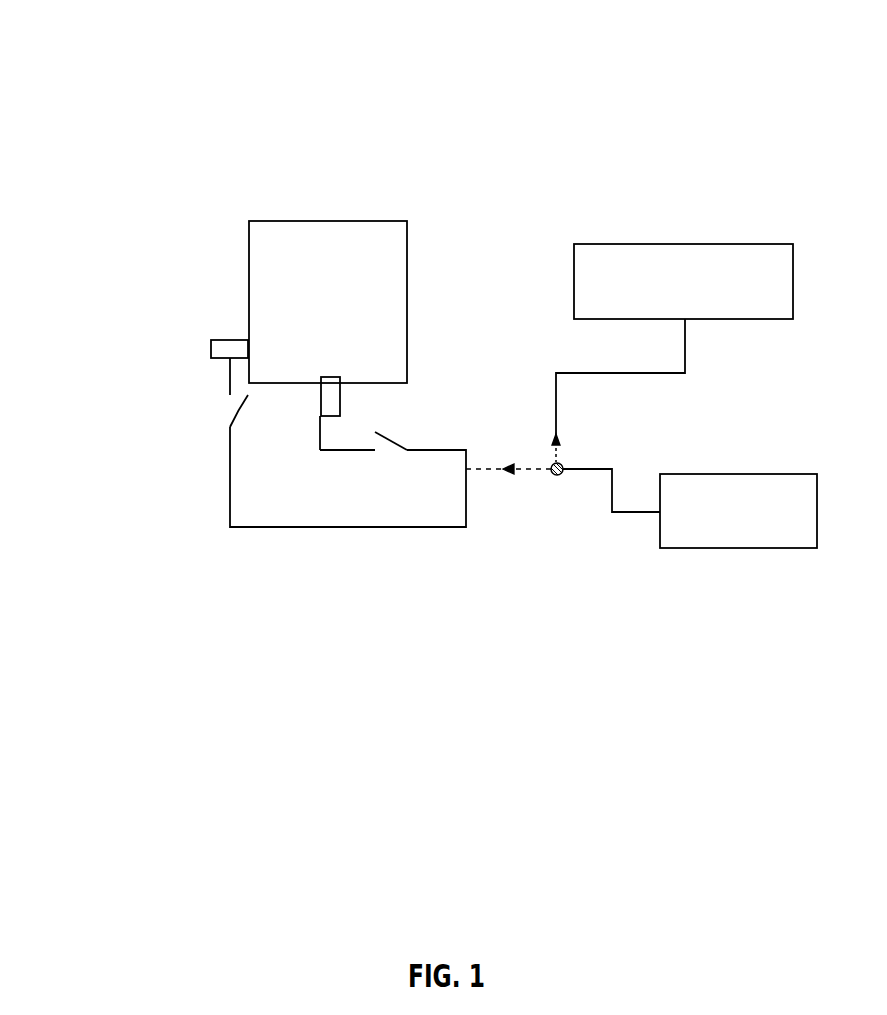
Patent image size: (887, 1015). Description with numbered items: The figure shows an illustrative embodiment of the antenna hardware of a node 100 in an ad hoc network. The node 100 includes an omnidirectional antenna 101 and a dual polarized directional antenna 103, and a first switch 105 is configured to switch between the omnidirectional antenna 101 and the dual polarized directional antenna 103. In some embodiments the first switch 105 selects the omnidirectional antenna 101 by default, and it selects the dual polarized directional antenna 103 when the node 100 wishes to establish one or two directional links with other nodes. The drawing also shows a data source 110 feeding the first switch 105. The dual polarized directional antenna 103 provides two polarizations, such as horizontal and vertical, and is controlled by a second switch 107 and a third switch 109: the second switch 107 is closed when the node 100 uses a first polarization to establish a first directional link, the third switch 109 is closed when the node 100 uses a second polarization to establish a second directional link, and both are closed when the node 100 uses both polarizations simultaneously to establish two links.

The node 100 is at (113, 76).
The omnidirectional antenna 101 is at (710, 306).
The dual polarized directional antenna 103 is at (385, 336).
The first switch 105 is at (565, 478).
The second switch 107 is at (397, 442).
The third switch 109 is at (238, 415).
The data source 110 is at (708, 535).